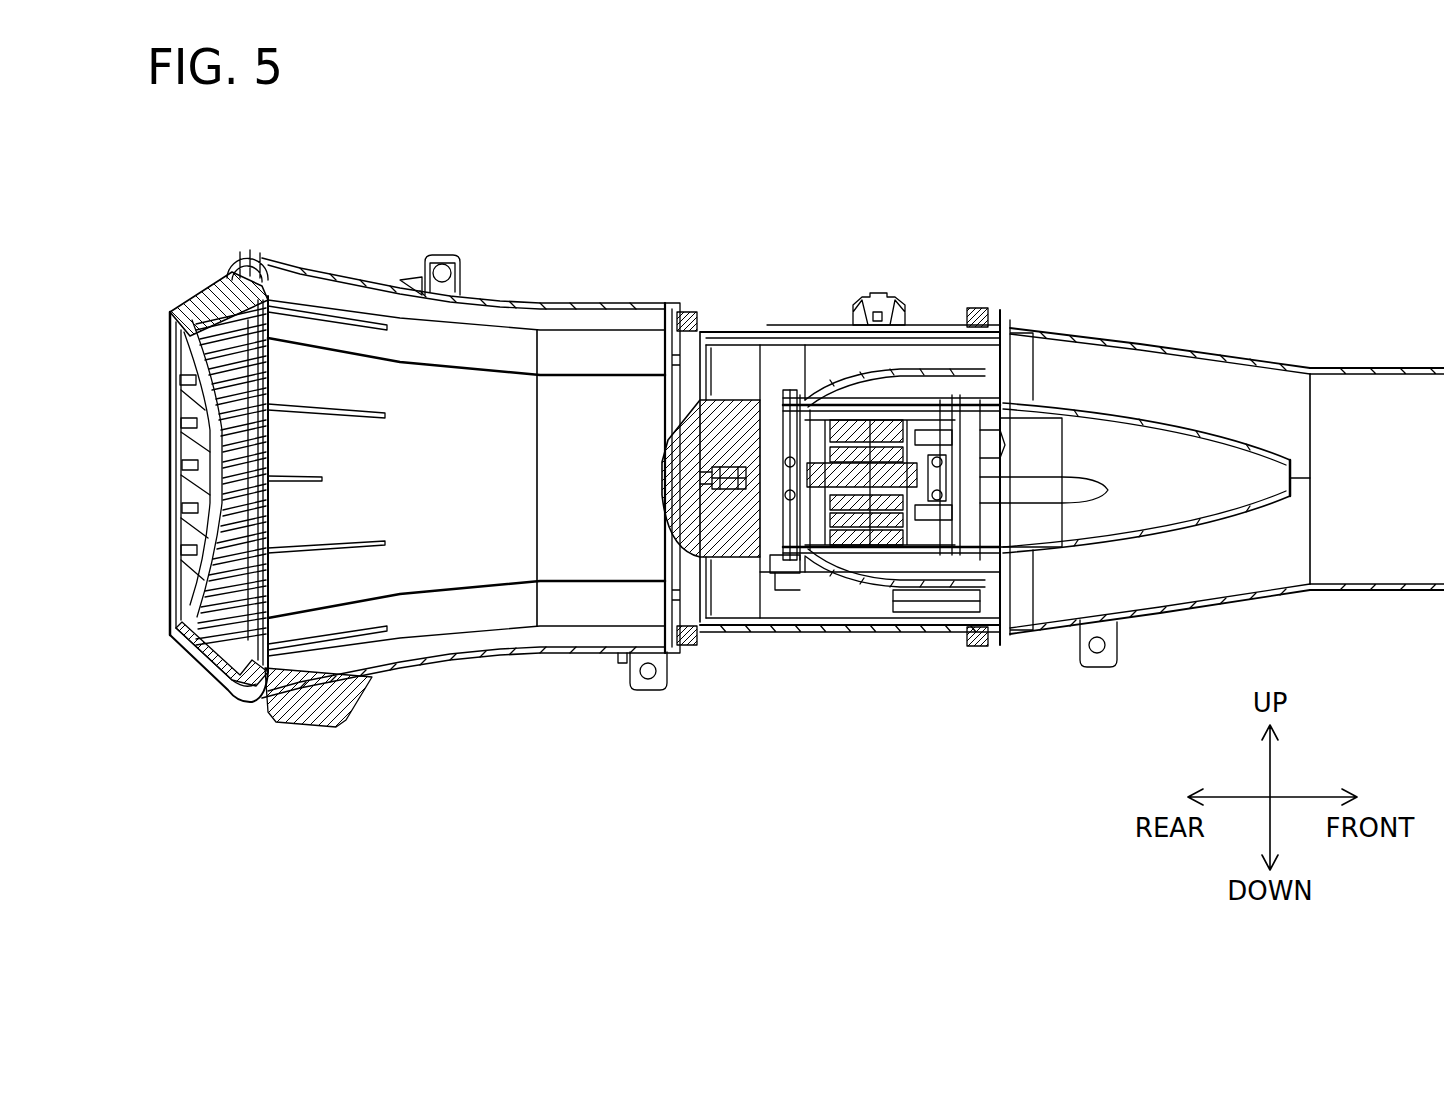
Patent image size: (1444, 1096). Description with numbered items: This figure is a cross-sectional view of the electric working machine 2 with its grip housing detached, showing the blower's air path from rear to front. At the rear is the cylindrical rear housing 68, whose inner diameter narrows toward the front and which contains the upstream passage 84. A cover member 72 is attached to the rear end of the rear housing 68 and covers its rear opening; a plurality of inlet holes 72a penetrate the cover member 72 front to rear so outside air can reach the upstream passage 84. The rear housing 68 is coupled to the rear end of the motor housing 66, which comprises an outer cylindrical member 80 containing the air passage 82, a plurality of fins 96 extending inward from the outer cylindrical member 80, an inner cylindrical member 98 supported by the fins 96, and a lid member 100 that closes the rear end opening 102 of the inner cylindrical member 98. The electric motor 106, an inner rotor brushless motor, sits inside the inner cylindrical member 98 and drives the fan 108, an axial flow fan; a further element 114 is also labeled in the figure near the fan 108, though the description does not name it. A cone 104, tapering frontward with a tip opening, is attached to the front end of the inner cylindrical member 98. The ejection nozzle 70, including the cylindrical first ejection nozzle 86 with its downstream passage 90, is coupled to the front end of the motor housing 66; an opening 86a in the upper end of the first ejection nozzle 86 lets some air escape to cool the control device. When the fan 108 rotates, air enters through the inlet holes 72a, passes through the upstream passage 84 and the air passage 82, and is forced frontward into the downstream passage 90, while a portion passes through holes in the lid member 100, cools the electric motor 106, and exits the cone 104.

The electric working machine 2 is at (336, 188).
The motor housing 66 is at (845, 665).
The rear housing 68 is at (433, 655).
The ejection nozzle 70 is at (1315, 628).
The cover member 72 is at (210, 302).
The inlet holes 72a is at (172, 502).
The outer cylindrical member 80 is at (914, 627).
The air passage 82 is at (726, 607).
The upstream passage 84 is at (484, 551).
The first ejection nozzle 86 is at (1353, 590).
The opening 86a is at (1165, 345).
The downstream passage 90 is at (1236, 578).
The fins 96 is at (953, 600).
The inner cylindrical member 98 is at (860, 553).
The lid member 100 is at (780, 557).
The rear end opening 102 is at (772, 415).
The cone 104 is at (1167, 535).
The electric motor 106 is at (832, 398).
The fan 108 is at (708, 385).
The screw 114 is at (728, 456).